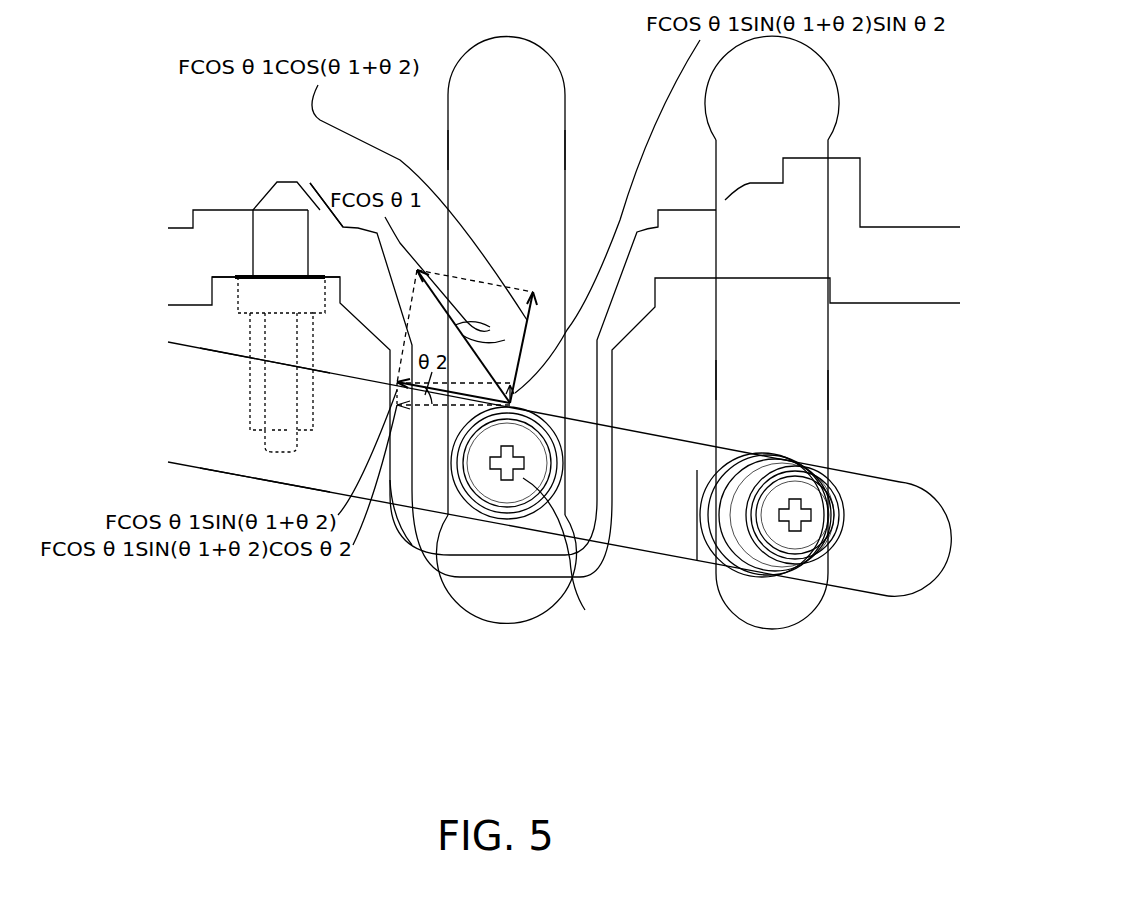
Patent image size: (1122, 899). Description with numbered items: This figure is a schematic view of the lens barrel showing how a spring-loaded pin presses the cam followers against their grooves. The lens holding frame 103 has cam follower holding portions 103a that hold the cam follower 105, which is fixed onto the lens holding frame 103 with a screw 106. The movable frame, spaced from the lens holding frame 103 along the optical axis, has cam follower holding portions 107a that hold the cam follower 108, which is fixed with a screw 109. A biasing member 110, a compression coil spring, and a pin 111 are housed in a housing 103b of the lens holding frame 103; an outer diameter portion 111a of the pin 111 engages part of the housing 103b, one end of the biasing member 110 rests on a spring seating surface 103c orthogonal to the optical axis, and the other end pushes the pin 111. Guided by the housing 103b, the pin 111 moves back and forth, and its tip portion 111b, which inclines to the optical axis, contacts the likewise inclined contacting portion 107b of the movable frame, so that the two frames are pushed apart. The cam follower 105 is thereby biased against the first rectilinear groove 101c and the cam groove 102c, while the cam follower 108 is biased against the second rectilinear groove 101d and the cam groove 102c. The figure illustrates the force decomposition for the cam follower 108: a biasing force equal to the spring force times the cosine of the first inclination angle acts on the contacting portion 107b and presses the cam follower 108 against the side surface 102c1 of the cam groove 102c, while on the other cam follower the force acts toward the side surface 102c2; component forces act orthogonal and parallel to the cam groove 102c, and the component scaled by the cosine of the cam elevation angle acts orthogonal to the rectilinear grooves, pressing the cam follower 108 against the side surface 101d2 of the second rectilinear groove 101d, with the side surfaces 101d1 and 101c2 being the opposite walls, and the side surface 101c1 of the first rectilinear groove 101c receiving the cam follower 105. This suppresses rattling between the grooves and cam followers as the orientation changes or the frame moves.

The first rectilinear groove 101c is at (812, 460).
The side surface of the first rectilinear groove 101c1 is at (830, 395).
The clip wall 101c2 is at (712, 372).
The second rectilinear groove 101d is at (530, 70).
The clip wall 101d1 is at (566, 140).
The side surface of the second rectilinear groove 101d2 is at (447, 140).
The cam groove 102c is at (905, 572).
The side surface of the cam groove 102c1 is at (215, 352).
The side surface of the cam groove 102c2 is at (207, 472).
The lens holding frame 103 is at (915, 318).
The cam follower holding portion 103a is at (697, 497).
The housing 103b is at (232, 305).
The spring seating surface 103c is at (262, 432).
The cam follower 105 is at (790, 565).
The screw 106 is at (812, 527).
The cam follower holding portion 107a is at (392, 560).
The contacting portion 107b is at (253, 200).
The cam follower 108 is at (505, 517).
The screw 109 is at (578, 550).
The biasing member 110 is at (255, 410).
The pin 111 is at (265, 262).
The outer diameter portion 111a is at (230, 295).
The tip portion 111b is at (270, 198).